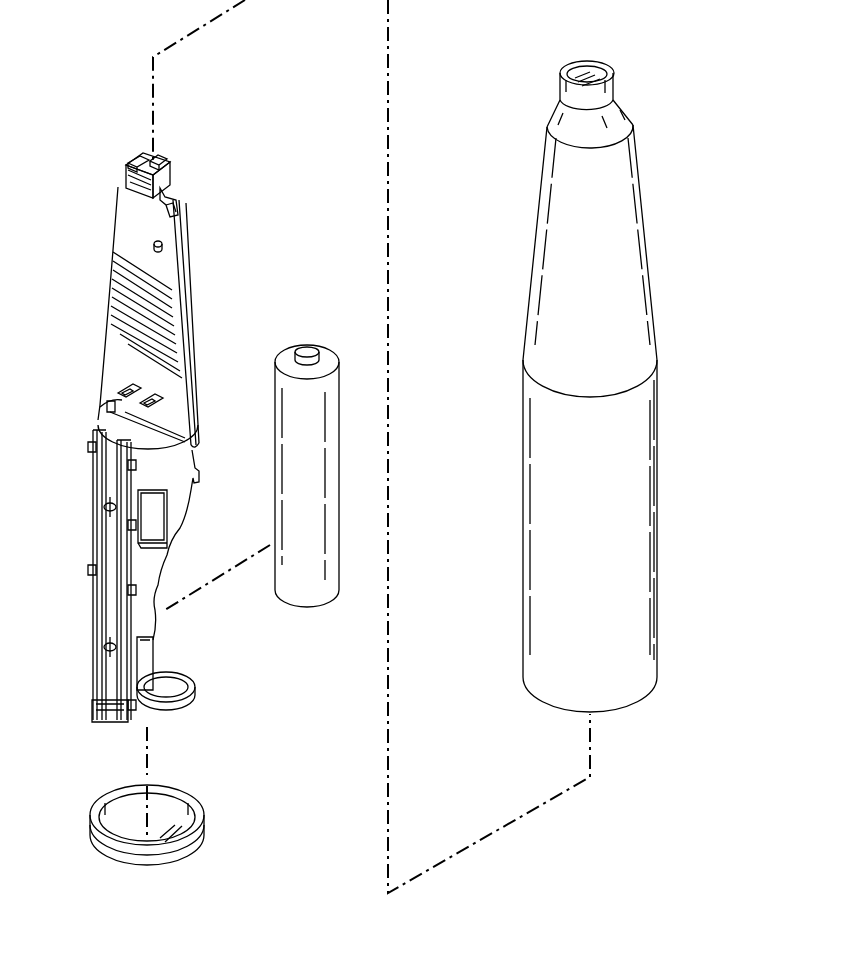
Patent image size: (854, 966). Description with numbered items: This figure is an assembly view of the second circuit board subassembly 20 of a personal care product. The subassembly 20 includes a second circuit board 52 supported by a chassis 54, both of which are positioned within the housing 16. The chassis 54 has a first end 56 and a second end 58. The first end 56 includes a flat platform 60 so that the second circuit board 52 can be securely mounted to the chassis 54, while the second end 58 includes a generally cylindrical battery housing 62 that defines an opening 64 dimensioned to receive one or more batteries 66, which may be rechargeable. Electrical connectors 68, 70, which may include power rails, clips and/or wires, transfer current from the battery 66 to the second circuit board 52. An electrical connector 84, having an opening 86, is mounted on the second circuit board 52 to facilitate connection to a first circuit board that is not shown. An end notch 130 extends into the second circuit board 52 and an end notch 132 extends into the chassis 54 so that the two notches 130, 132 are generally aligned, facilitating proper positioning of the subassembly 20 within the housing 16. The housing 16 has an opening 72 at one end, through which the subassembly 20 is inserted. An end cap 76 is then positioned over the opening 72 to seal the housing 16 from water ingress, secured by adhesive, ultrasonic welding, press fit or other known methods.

The second circuit board subassembly 20 is at (710, 58).
The housing 16 is at (640, 240).
The opening 72 is at (631, 711).
The battery 66 is at (323, 609).
The second circuit board 52 is at (125, 225).
The chassis 54 is at (205, 405).
The platform 60 is at (182, 212).
The electrical connector 70 is at (130, 385).
The electrical connector 84 is at (130, 182).
The opening 86 is at (132, 153).
The end notch 130 is at (193, 142).
The end notch 132 is at (160, 158).
The first end 56 is at (134, 130).
The opening 64 is at (198, 532).
The electrical connector 68 is at (105, 600).
The second end 58 is at (107, 722).
The battery housing 62 is at (172, 706).
The end cap 76 is at (120, 864).